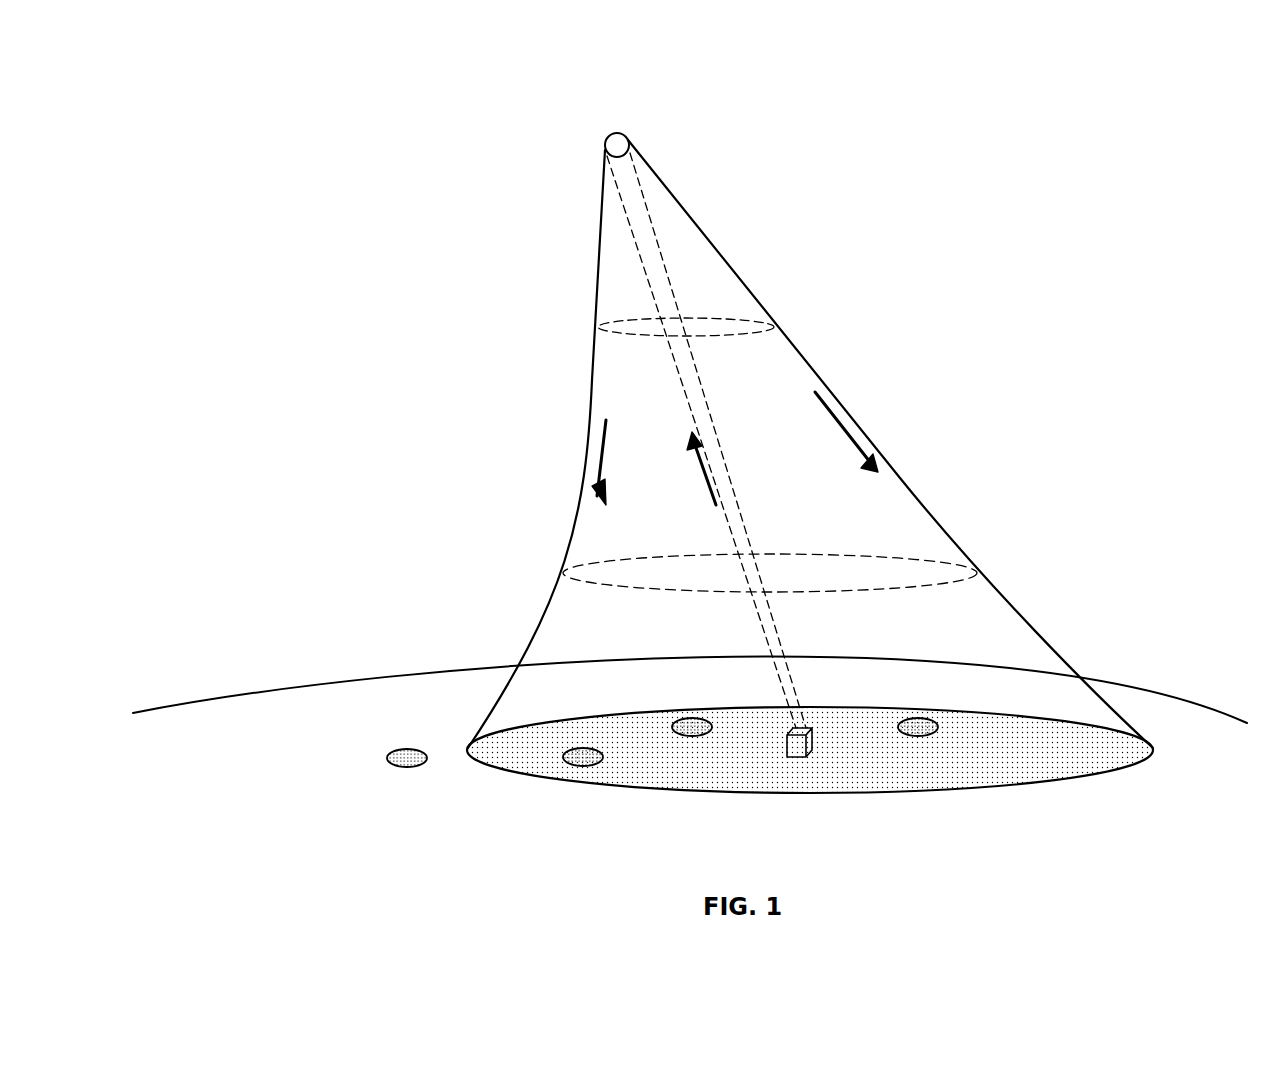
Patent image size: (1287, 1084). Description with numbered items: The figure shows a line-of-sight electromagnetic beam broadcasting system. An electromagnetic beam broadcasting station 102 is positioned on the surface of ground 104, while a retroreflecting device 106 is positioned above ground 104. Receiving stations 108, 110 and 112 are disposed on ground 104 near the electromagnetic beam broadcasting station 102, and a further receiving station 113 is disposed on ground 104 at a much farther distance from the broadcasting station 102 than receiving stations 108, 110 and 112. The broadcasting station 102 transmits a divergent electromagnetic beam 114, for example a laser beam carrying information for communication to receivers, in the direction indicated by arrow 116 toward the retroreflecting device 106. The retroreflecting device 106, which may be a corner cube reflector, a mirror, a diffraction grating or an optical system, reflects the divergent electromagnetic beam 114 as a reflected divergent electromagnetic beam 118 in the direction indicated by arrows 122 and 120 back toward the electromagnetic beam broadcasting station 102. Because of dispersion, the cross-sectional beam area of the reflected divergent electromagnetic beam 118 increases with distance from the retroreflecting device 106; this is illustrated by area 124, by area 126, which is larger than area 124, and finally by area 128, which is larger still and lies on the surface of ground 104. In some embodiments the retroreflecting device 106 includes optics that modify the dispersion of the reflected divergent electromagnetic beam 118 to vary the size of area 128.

The electromagnetic beam broadcasting station 102 is at (795, 760).
The ground 104 is at (318, 727).
The retroreflecting device 106 is at (610, 134).
The receiving station 108 is at (583, 767).
The receiving station 110 is at (692, 718).
The receiving station 112 is at (920, 718).
The receiving station 113 is at (405, 768).
The divergent electromagnetic beam 114 is at (702, 385).
The arrow 116 is at (700, 477).
The reflected divergent electromagnetic beam 118 is at (797, 347).
The arrow 120 is at (595, 455).
The arrow 122 is at (852, 430).
The area 124 is at (603, 322).
The area 126 is at (575, 566).
The area 128 is at (838, 793).